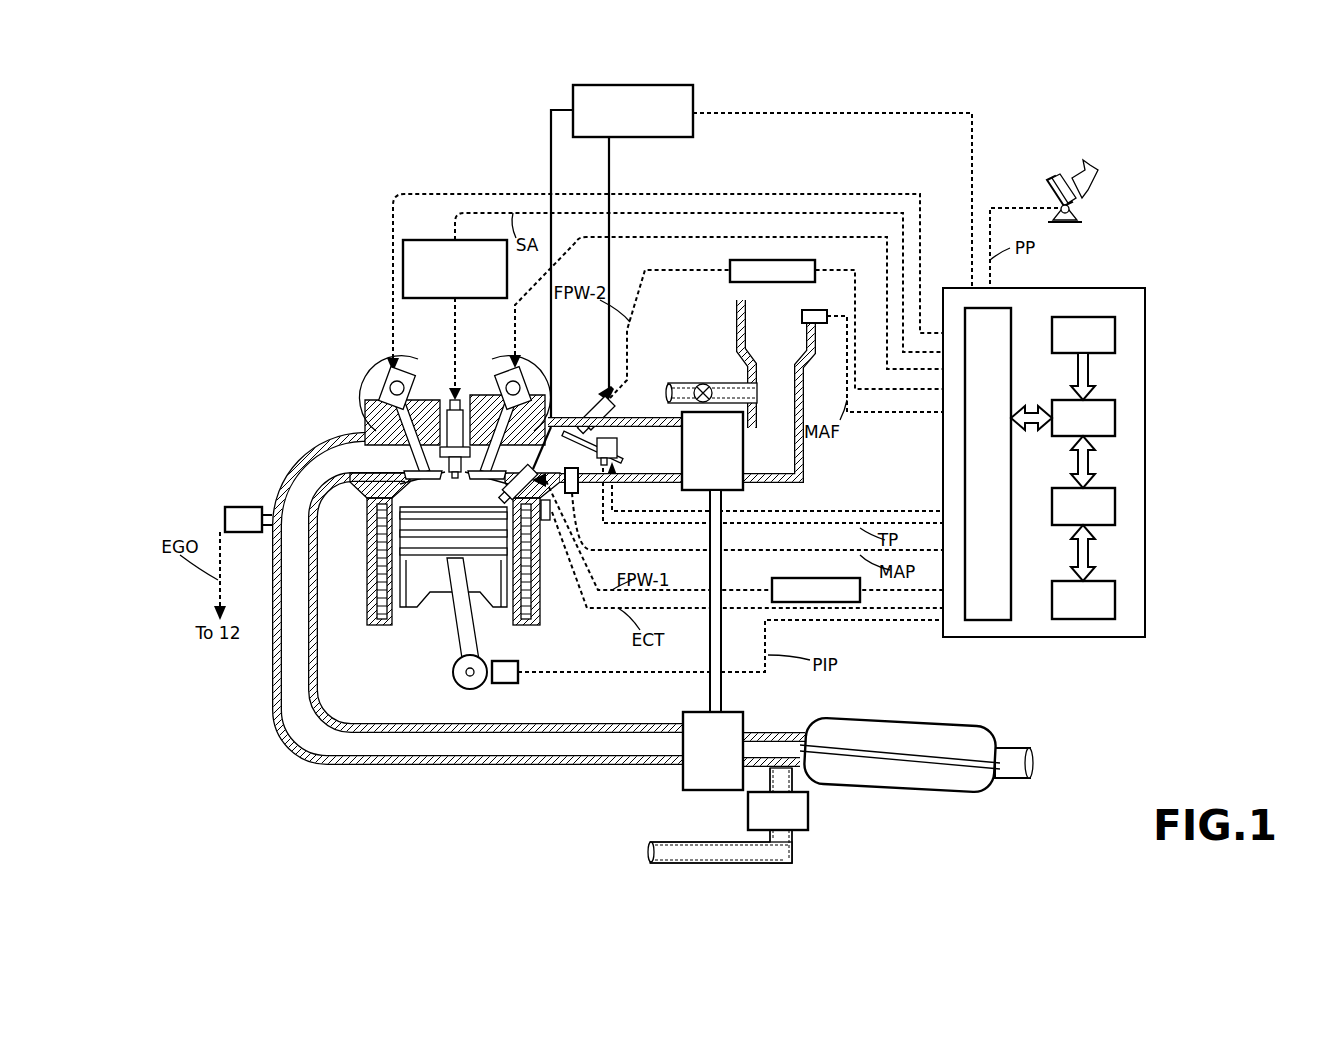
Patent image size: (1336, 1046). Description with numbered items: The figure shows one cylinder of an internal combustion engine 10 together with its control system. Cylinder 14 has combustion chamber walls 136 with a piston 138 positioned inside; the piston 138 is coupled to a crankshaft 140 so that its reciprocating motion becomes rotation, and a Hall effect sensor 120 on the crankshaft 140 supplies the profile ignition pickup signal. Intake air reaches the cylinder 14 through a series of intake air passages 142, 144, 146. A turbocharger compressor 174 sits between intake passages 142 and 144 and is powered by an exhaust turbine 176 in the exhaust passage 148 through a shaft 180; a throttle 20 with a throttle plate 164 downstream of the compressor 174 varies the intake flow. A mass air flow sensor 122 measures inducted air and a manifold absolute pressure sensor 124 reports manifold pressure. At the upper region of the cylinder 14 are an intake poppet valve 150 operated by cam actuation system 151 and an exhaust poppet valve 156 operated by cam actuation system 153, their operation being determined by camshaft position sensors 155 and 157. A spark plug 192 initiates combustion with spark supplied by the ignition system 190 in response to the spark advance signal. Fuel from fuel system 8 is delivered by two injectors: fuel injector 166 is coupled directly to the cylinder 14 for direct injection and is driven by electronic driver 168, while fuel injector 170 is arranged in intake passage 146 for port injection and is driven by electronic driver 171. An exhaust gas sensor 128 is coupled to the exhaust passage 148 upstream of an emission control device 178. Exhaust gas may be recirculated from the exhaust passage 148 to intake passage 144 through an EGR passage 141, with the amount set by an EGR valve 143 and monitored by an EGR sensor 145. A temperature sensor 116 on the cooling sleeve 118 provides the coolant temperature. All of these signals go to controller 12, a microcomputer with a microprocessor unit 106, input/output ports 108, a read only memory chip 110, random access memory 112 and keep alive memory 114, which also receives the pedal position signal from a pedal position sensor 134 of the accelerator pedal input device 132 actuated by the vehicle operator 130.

The fuel system 8 is at (613, 277).
The internal combustion engine 10 is at (318, 271).
The controller 12 is at (1079, 451).
The cylinder 14 is at (370, 505).
The throttle 20 is at (615, 438).
The microprocessor unit 106 is at (1115, 412).
The input/output ports 108 is at (1012, 310).
The read only memory chip 110 is at (1115, 330).
The random access memory 112 is at (1115, 500).
The keep alive memory 114 is at (1115, 595).
The temperature sensor 116 is at (552, 520).
The cooling sleeve 118 is at (540, 590).
The Hall effect sensor 120 is at (505, 683).
The mass air flow sensor 122 is at (815, 310).
The manifold absolute pressure sensor 124 is at (580, 497).
The exhaust gas sensor 128 is at (225, 515).
The vehicle operator 130 is at (1080, 183).
The input device 132 is at (1050, 185).
The pedal position sensor 134 is at (1075, 207).
The combustion chamber walls 136 is at (395, 625).
The piston 138 is at (455, 610).
The crankshaft 140 is at (462, 688).
The EGR passage 141 is at (700, 383).
The intake air passage 142 is at (776, 389).
The EGR valve 143 is at (705, 385).
The intake air passage 144 is at (615, 441).
The EGR sensor 145 is at (808, 825).
The intake air passage 146 is at (612, 459).
The exhaust passage 148 is at (480, 598).
The intake poppet valve 150 is at (492, 412).
The cam actuation system 151 is at (505, 372).
The cam actuation system 153 is at (404, 372).
The camshaft position sensor 155 is at (553, 380).
The exhaust poppet valve 156 is at (405, 460).
The camshaft position sensor 157 is at (383, 380).
The throttle plate 164 is at (575, 433).
The fuel injector 166 is at (508, 478).
The electronic driver 168 is at (772, 580).
The fuel injector 170 is at (598, 400).
The electronic driver 171 is at (730, 265).
The compressor 174 is at (743, 485).
The exhaust turbine 176 is at (682, 785).
The emission control device 178 is at (895, 722).
The shaft 180 is at (722, 688).
The ignition system 190 is at (432, 240).
The spark plug 192 is at (450, 410).